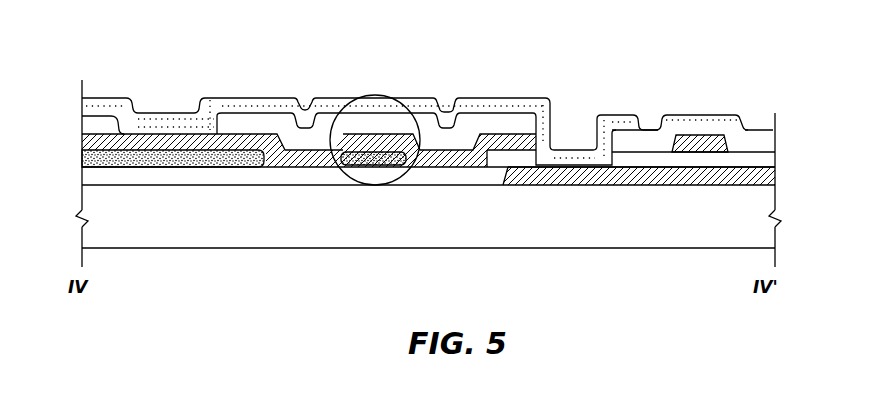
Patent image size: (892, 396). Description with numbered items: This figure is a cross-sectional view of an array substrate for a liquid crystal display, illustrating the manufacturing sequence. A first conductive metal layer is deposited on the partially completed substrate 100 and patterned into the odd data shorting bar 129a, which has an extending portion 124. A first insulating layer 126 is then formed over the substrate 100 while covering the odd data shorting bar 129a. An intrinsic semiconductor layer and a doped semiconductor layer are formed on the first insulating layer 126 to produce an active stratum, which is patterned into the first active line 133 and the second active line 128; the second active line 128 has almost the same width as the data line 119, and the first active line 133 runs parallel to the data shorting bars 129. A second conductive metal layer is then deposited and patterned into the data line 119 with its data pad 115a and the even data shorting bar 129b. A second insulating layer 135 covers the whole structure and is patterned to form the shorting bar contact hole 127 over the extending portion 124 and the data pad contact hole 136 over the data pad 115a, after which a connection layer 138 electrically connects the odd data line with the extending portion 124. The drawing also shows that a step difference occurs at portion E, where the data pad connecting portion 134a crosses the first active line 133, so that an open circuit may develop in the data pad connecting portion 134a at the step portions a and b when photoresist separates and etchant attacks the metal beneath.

The substrate 100 is at (428, 216).
The data pad 115a is at (150, 140).
The data line 119 is at (100, 124).
The extending portion 124 is at (600, 172).
The first insulating layer 126 is at (763, 160).
The shorting bar contact hole 127 is at (579, 128).
The second active line 128 is at (201, 133).
The data shorting bars 129 is at (752, 58).
The odd data shorting bar 129a is at (746, 165).
The even data shorting bar 129b is at (713, 135).
The first active line 133 is at (381, 158).
The data pad connecting portion 134a is at (357, 135).
The second insulating layer 135 is at (763, 142).
The data pad contact hole 136 is at (170, 100).
The connection layer 138 is at (508, 98).
The portion E is at (352, 181).
The step portion a is at (336, 140).
The step portion b is at (418, 140).